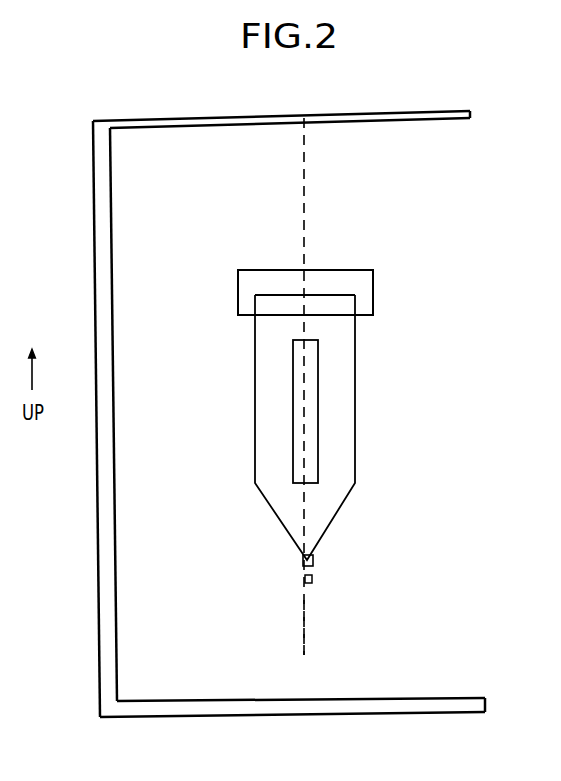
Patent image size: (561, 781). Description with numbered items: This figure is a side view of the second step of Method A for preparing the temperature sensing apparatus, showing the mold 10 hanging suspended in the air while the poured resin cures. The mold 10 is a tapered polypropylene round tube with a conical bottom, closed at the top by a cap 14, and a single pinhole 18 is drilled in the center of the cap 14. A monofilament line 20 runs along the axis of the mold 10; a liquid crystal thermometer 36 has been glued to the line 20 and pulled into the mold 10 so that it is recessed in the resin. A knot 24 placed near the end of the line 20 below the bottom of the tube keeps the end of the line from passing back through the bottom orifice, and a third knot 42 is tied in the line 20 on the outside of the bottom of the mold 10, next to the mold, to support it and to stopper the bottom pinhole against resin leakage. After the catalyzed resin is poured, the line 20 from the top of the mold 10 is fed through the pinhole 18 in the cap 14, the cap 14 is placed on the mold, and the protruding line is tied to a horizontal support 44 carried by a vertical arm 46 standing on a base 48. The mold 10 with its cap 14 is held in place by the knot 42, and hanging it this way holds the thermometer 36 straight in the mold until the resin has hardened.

The tapered polypropylene round tube 10 is at (358, 468).
The cap 14 is at (364, 287).
The pinhole 18 is at (303, 268).
The monofilament line 20 is at (307, 621).
The knot 24 is at (314, 564).
The liquid crystal thermometer 36 is at (320, 408).
The third knot 42 is at (312, 193).
The horizontal support 44 is at (223, 113).
The vertical arm 46 is at (98, 577).
The base 48 is at (387, 698).